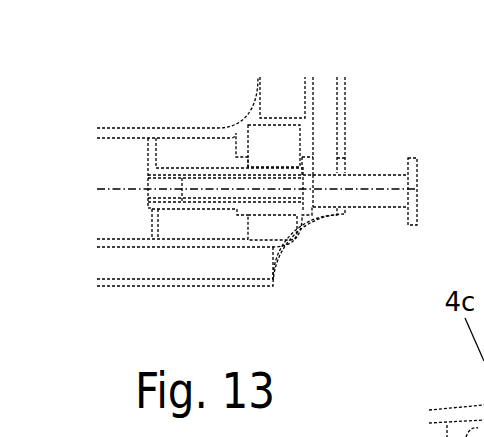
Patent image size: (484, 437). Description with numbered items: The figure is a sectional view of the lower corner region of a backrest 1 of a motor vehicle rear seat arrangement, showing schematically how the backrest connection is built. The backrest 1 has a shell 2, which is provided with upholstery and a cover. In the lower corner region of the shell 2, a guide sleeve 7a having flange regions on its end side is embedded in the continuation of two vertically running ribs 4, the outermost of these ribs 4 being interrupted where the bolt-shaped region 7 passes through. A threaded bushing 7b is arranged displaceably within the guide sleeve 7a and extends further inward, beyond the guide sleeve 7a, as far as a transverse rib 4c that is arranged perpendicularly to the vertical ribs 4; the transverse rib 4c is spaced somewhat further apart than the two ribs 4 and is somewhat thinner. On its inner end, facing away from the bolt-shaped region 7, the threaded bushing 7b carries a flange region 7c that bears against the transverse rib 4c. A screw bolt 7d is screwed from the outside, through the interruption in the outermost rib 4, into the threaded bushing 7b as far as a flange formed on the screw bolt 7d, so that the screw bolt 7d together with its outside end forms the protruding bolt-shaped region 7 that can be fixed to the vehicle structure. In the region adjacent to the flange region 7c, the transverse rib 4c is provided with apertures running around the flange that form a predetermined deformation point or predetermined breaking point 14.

The backrest 1 is at (176, 84).
The shell 2 is at (323, 113).
The vertically running ribs 4 is at (133, 140).
The transverse rib 4c is at (155, 150).
The bolt-shaped region 7 is at (405, 188).
The guide sleeve 7a is at (263, 212).
The threaded bushing 7b is at (173, 210).
The flange region 7c is at (148, 208).
The screw bolt 7d is at (358, 200).
The predetermined deformation point or predetermined breaking point 14 is at (158, 226).